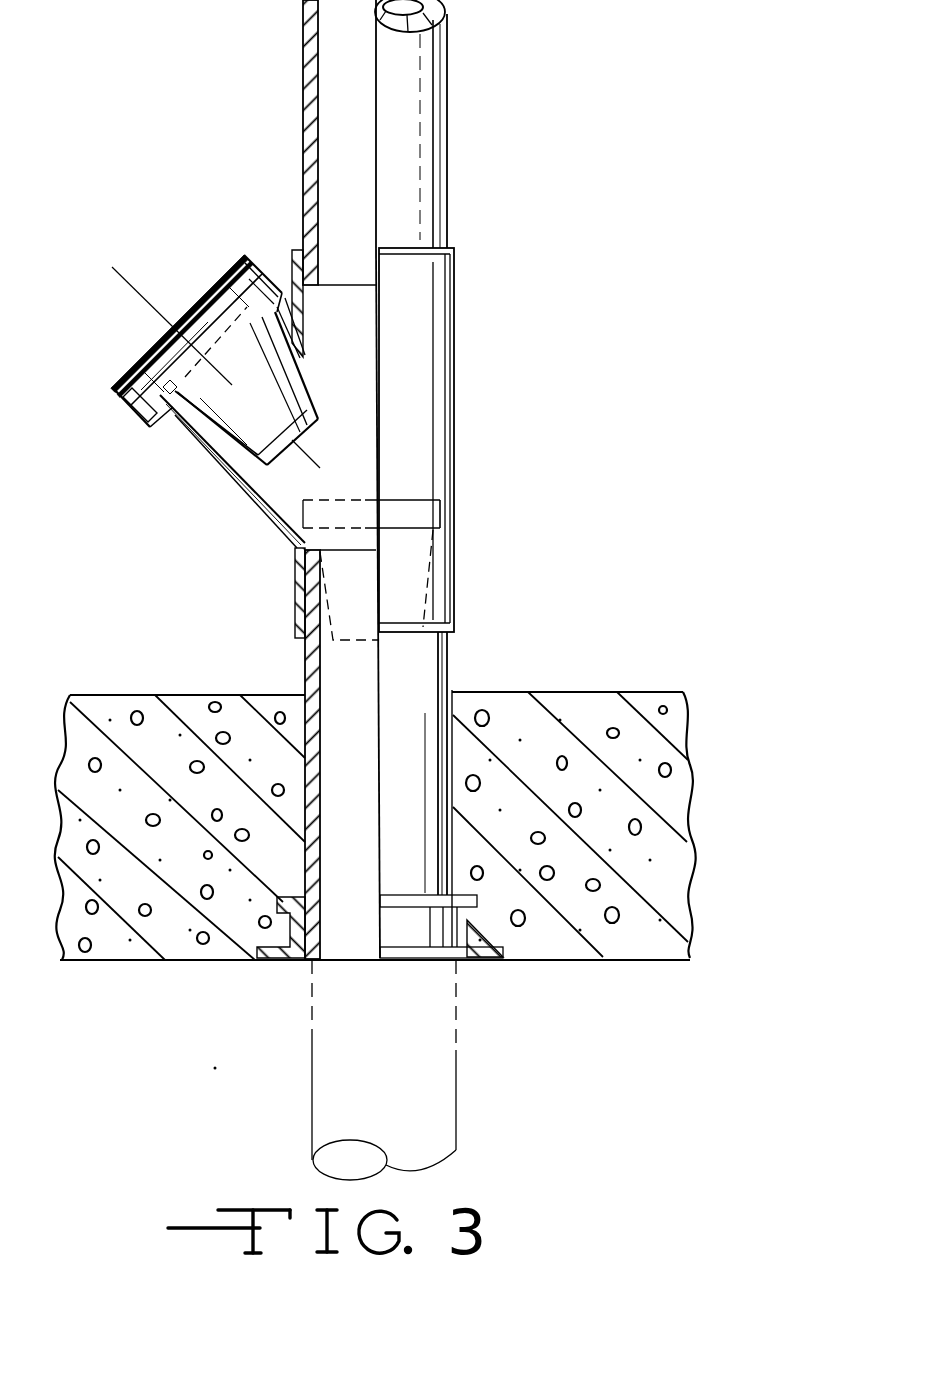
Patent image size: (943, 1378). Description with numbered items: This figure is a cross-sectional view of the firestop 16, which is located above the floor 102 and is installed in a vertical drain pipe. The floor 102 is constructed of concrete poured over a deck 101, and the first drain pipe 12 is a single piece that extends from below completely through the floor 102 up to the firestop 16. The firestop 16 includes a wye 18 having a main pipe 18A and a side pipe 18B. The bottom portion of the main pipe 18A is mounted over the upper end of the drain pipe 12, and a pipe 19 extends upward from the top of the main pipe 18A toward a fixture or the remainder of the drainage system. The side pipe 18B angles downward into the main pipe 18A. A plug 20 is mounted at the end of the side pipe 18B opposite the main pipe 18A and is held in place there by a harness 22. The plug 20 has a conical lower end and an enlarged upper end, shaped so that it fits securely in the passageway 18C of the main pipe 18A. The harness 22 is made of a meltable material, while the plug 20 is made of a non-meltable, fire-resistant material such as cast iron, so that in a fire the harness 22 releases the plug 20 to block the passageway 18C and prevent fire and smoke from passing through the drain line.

The drain pipe 12 is at (457, 1070).
The firestop 16 is at (471, 479).
The wye 18 is at (472, 603).
The main pipe 18A is at (433, 286).
The side pipe 18B is at (215, 482).
The passageway 18C is at (290, 482).
The pipe 19 is at (472, 124).
The plug 20 is at (190, 440).
The harness 22 is at (197, 448).
The deck 101 is at (636, 950).
The floor 102 is at (685, 742).